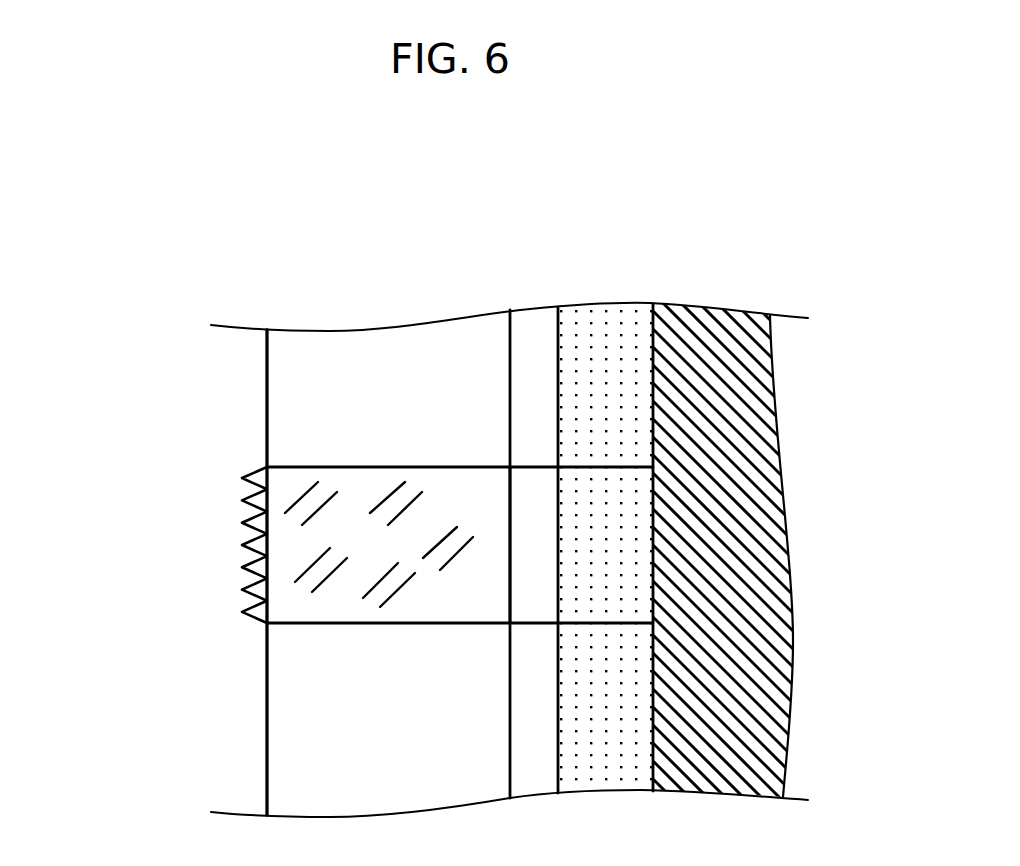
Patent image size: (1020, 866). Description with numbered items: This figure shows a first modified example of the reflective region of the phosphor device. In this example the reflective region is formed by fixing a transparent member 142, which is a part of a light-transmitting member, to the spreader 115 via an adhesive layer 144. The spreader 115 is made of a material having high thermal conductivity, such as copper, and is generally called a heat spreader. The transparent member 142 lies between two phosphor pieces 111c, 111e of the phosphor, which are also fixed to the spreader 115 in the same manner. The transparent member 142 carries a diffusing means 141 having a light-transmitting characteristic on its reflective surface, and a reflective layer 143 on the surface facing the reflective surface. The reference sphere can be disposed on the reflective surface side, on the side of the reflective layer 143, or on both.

The phosphor piece 111c is at (283, 400).
The phosphor piece 111e is at (283, 732).
The spreader 115 is at (720, 330).
The diffusing means 141 is at (242, 567).
The transparent member 142 is at (353, 493).
The reflective layer 143 is at (535, 495).
The adhesive layer 144 is at (607, 492).